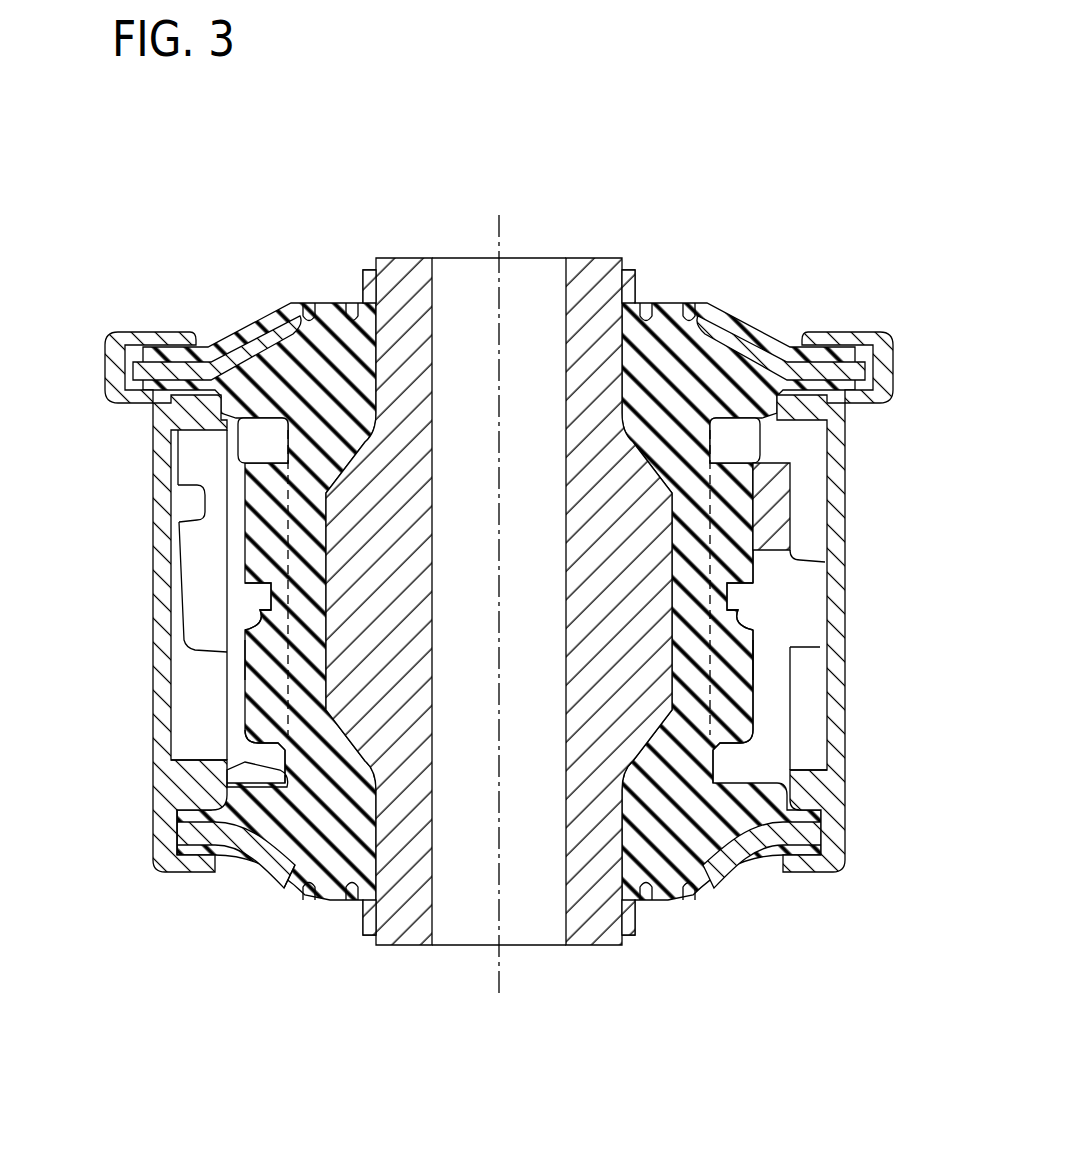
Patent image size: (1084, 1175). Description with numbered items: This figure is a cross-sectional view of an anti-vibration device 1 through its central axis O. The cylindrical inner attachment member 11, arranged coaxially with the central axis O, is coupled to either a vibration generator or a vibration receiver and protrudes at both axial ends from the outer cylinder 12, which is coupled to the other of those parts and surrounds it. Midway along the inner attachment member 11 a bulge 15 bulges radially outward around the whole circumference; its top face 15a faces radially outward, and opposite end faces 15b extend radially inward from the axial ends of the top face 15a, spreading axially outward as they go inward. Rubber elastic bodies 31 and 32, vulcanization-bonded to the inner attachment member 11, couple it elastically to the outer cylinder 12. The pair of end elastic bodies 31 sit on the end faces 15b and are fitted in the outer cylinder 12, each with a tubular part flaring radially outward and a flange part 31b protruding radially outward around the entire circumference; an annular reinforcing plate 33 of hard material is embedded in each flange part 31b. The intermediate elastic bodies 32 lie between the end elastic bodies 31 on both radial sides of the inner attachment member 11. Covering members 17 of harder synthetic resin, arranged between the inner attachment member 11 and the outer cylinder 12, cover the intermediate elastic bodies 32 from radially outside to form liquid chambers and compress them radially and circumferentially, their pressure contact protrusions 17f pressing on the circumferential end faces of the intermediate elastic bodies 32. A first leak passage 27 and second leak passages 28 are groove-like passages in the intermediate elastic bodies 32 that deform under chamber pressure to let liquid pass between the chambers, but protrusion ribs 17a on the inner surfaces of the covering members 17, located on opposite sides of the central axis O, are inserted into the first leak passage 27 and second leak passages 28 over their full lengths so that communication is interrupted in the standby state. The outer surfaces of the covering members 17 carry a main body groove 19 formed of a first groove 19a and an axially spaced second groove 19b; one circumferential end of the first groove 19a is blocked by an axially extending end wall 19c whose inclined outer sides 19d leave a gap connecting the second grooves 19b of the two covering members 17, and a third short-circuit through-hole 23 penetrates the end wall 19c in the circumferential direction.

The anti-vibration device 1 is at (855, 140).
The inner attachment member 11 is at (590, 245).
The outer cylinder 12 is at (880, 330).
The bulge 15 is at (690, 486).
The top face 15a is at (856, 588).
The end faces 15b is at (645, 490).
The covering members 17 is at (156, 428).
The protrusion ribs 17a is at (275, 432).
The pressure contact protrusions 17f is at (300, 712).
The main body groove 19 is at (838, 437).
The first groove 19a is at (790, 515).
The second groove 19b is at (225, 738).
The end wall 19c is at (158, 555).
The outer sides 19d is at (185, 460).
The third short-circuit through-hole 23 is at (195, 505).
The first leak passage 27 is at (265, 600).
The second leak passages 28 is at (256, 435).
The end elastic bodies 31 is at (765, 320).
The flange part 31b is at (200, 815).
The intermediate elastic bodies 32 is at (230, 660).
The reinforcing plate 33 is at (268, 866).
The central axis O is at (495, 232).